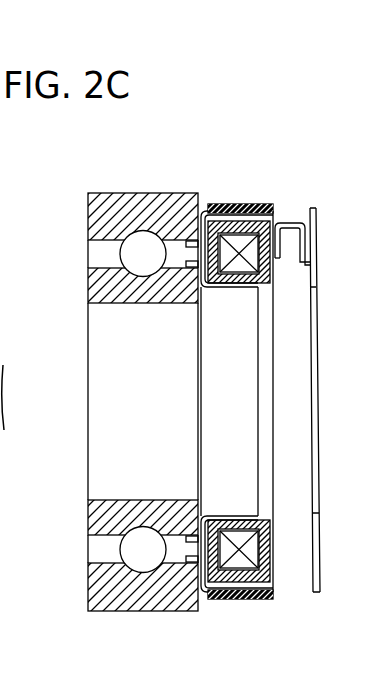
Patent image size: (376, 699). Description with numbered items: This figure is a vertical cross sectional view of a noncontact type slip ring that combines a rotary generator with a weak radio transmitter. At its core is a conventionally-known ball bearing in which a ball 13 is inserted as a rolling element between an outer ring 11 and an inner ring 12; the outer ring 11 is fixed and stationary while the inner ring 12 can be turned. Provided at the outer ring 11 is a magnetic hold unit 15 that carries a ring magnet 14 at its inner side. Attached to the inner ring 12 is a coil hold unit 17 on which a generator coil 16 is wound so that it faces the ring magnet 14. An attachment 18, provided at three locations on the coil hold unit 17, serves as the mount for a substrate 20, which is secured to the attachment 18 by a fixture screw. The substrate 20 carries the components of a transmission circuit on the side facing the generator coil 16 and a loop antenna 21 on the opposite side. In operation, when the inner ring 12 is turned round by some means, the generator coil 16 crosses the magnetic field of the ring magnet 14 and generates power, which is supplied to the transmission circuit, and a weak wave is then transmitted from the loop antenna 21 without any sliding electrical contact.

The outer ring 11 is at (103, 214).
The inner ring 12 is at (103, 287).
The ball 13 is at (135, 253).
The ring magnet 14 is at (232, 599).
The magnetic hold unit 15 is at (259, 593).
The generator coil 16 is at (233, 204).
The coil hold unit 17 is at (278, 562).
The attachment 18 is at (290, 226).
The substrate 20 is at (318, 214).
The loop antenna 21 is at (320, 569).